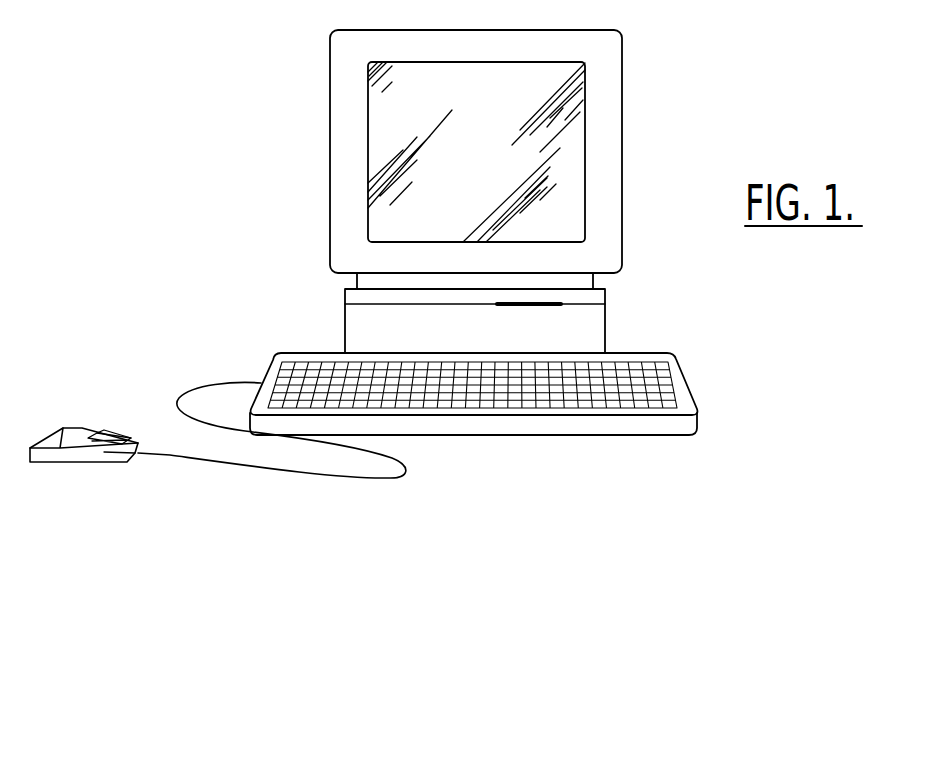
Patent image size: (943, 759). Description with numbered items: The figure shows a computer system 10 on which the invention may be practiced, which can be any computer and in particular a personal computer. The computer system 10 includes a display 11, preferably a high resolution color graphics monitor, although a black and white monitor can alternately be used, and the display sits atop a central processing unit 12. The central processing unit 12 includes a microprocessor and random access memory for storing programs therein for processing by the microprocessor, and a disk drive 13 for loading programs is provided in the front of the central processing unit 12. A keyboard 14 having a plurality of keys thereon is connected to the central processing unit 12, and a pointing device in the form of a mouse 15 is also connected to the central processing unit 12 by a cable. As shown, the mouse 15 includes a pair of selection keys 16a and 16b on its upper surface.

The computer system 10 is at (218, 142).
The display 11 is at (504, 155).
The central processing unit 12 is at (485, 340).
The disk drive 13 is at (538, 306).
The keyboard 14 is at (266, 370).
The mouse 15 is at (62, 458).
The selection key 16a is at (103, 450).
The selection key 16b is at (113, 434).